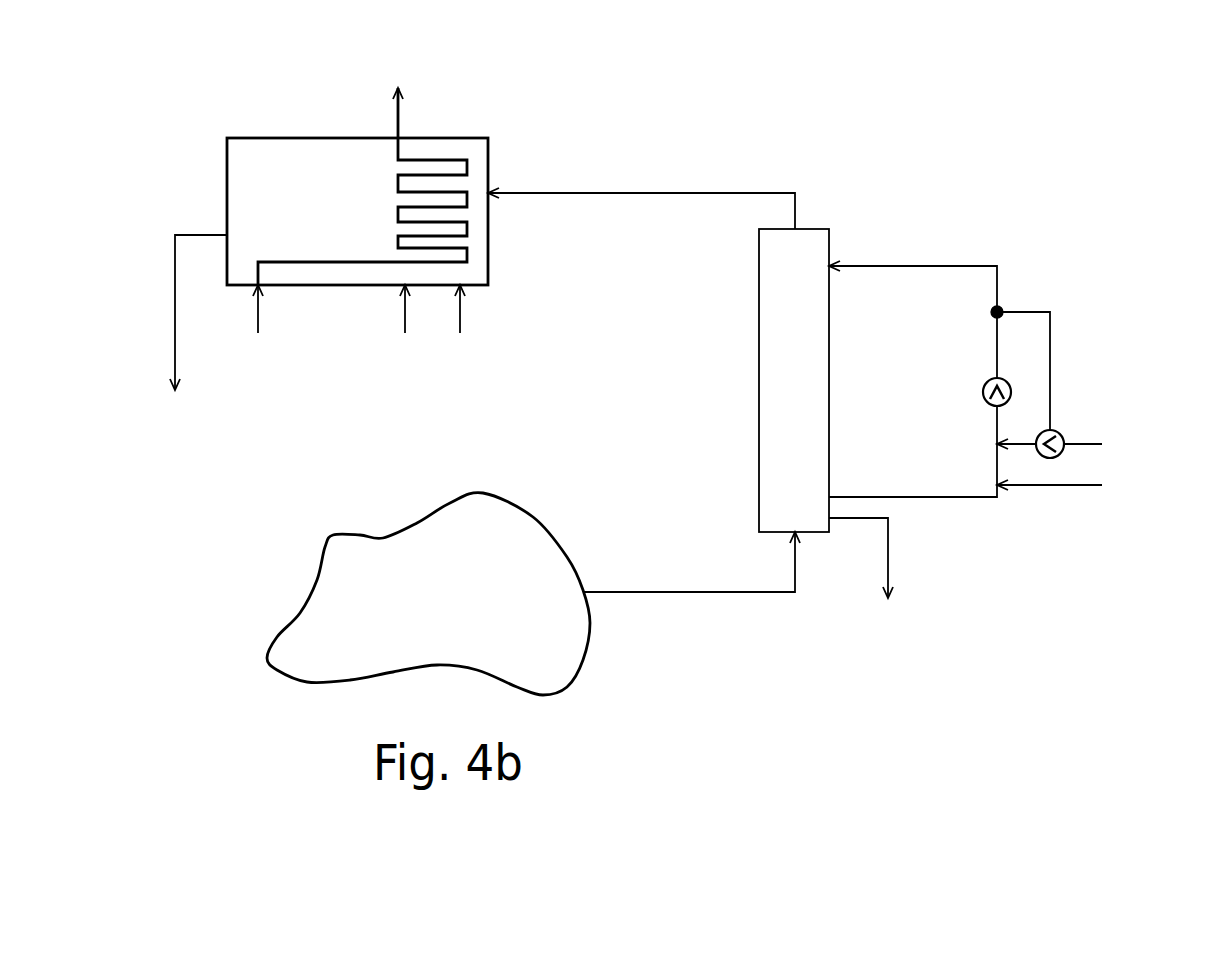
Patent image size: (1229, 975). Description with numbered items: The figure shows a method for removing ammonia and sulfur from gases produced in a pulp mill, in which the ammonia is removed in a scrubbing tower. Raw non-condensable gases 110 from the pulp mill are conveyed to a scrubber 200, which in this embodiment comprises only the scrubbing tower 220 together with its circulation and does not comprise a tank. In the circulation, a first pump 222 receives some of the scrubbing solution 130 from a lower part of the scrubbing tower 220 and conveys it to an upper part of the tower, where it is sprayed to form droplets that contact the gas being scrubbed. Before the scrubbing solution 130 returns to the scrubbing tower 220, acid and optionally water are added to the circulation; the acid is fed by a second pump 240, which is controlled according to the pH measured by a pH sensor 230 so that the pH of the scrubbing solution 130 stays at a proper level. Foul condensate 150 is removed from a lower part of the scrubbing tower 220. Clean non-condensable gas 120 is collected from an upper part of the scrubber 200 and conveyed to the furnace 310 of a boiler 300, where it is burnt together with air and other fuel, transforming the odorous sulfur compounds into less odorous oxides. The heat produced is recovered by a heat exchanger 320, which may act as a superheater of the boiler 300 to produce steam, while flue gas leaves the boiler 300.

The raw non-condensable gases 110 is at (680, 593).
The clean non-condensable gas 120 is at (755, 193).
The scrubbing solution 130 is at (995, 335).
The foul condensate 150 is at (890, 542).
The scrubber 200 is at (758, 297).
The scrubbing tower 220 is at (822, 412).
The first pump 222 is at (987, 397).
The pH sensor 230 is at (1005, 303).
The second pump 240 is at (1063, 432).
The boiler 300 is at (227, 190).
The furnace 310 is at (357, 211).
The heat exchanger 320 is at (438, 160).